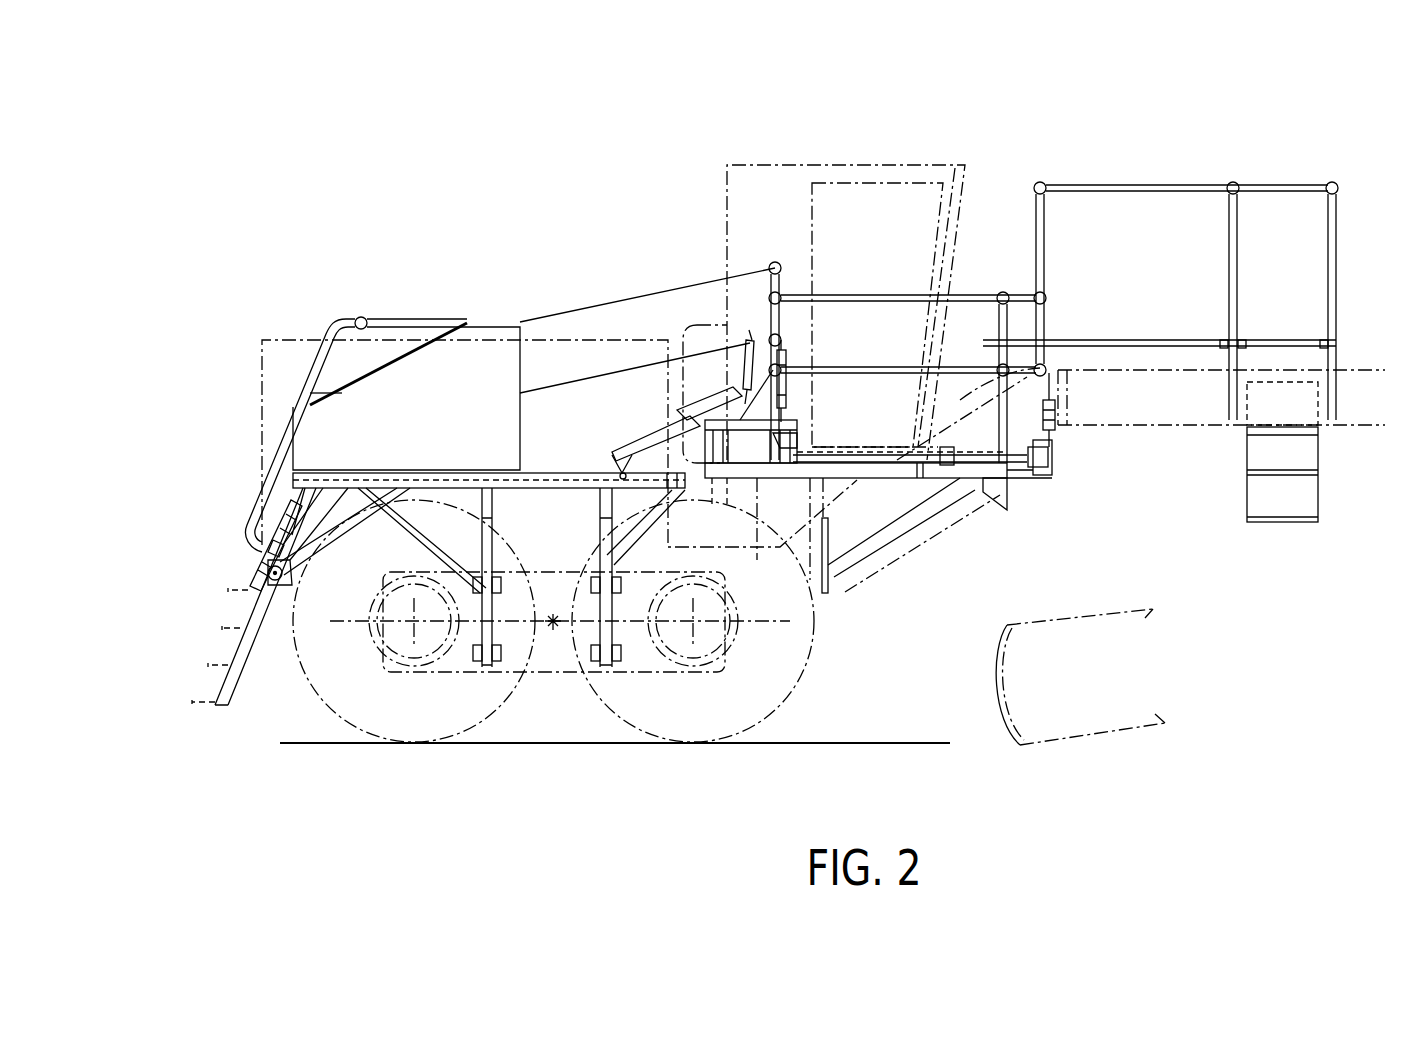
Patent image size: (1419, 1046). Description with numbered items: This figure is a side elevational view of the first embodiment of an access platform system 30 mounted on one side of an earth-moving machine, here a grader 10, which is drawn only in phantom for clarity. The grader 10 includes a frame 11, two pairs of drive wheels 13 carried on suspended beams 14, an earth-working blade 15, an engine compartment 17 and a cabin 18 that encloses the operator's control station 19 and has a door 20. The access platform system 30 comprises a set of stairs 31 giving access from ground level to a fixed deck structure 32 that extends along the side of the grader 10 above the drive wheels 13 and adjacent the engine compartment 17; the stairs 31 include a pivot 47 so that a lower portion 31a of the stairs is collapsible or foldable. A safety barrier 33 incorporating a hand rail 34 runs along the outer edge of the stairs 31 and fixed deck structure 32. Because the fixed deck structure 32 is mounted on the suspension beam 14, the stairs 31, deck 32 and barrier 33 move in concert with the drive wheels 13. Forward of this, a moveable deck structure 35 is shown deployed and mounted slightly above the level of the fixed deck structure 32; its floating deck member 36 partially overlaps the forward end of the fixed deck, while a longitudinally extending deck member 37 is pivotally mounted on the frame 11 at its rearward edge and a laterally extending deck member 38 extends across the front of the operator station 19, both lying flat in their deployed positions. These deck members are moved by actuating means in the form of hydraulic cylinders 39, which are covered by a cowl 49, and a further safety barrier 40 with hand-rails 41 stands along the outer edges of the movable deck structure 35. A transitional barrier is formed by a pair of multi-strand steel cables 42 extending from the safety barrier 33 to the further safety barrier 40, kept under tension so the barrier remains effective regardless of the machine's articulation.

The grader 10 is at (1083, 150).
The frame 11 is at (1140, 410).
The drive wheels 13 is at (425, 722).
The suspended beam 14 is at (566, 655).
The blade 15 is at (1090, 715).
The engine compartment 17 is at (278, 372).
The cabin 18 is at (772, 205).
The operator's control station 19 is at (946, 233).
The door 20 is at (876, 222).
The access platform system 30 is at (478, 195).
The stairs 31 is at (280, 527).
The lower portion of the stairs 31a is at (258, 612).
The fixed deck structure 32 is at (545, 472).
The safety barrier 33 is at (424, 413).
The hand rail 34 is at (318, 355).
The moveable deck structure 35 is at (863, 496).
The floating deck member 36 is at (645, 445).
The longitudinally extending deck member 37 is at (833, 470).
The laterally extending deck member 38 is at (1020, 472).
The hydraulic cylinders 39 is at (745, 345).
The further safety barrier 40 is at (910, 373).
The hand-rails 41 is at (965, 298).
The multi-strand steel cables 42 is at (590, 385).
The pivot 47 is at (262, 568).
The cowl 49 is at (617, 487).